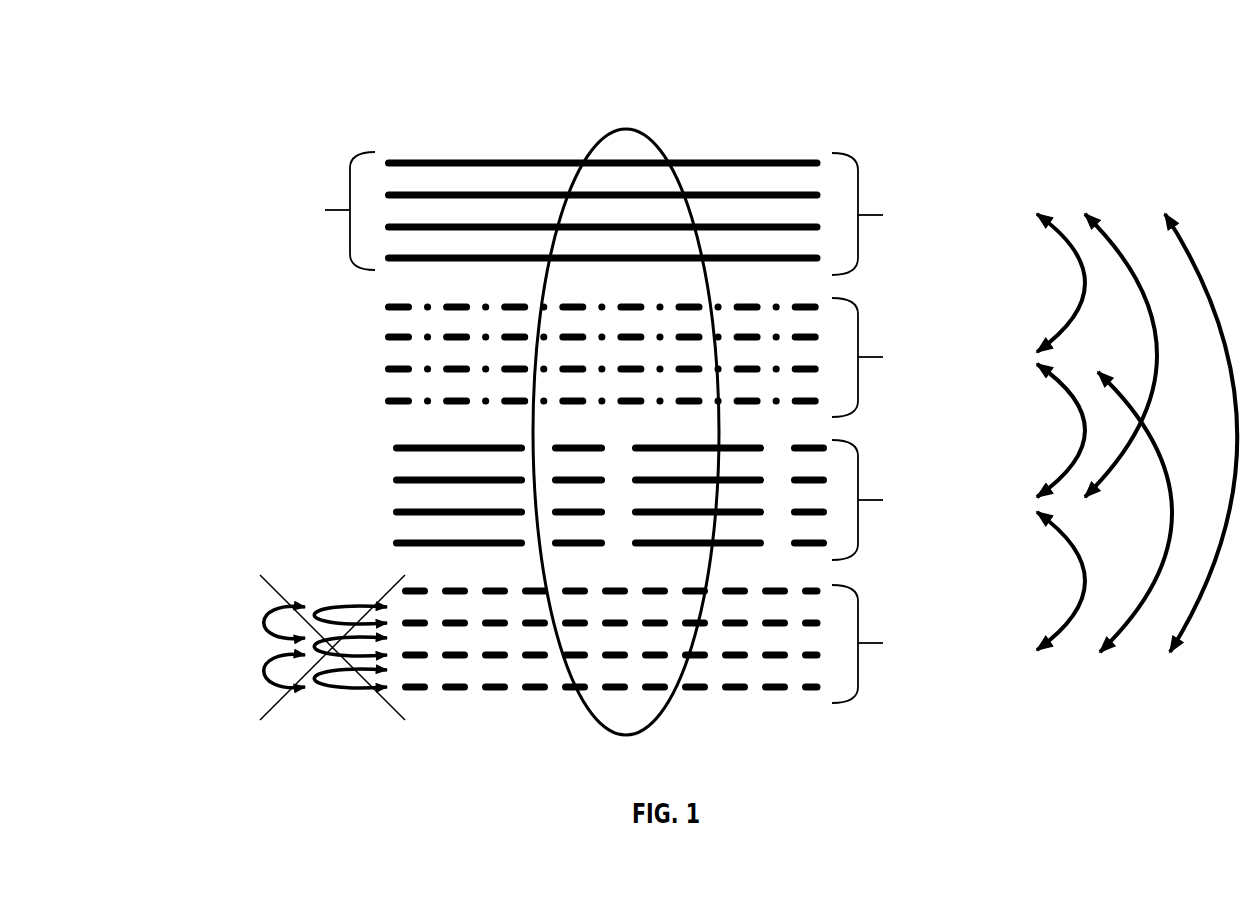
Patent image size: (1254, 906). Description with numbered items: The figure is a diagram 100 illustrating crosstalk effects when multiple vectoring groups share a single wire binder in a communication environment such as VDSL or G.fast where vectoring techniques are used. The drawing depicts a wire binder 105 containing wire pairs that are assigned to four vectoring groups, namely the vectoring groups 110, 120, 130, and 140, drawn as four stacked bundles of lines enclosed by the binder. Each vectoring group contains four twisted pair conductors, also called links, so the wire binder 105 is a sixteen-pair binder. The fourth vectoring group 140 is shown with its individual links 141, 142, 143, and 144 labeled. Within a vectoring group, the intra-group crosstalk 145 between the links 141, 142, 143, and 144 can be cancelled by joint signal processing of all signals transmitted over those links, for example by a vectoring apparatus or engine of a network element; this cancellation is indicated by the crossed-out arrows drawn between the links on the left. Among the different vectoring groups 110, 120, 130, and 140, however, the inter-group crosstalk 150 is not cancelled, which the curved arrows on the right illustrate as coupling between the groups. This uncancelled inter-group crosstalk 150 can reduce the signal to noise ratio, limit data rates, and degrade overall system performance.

The diagram 100 is at (250, 95).
The wire binder 105 is at (661, 147).
The vectoring group 110 is at (957, 250).
The vectoring group 120 is at (957, 397).
The vectoring group 130 is at (957, 541).
The vectoring group 140 is at (708, 654).
The link 141 is at (821, 590).
The link 142 is at (821, 622).
The link 143 is at (821, 655).
The link 144 is at (821, 688).
The intra-group crosstalk 145 is at (192, 670).
The inter-group crosstalk 150 is at (1180, 182).